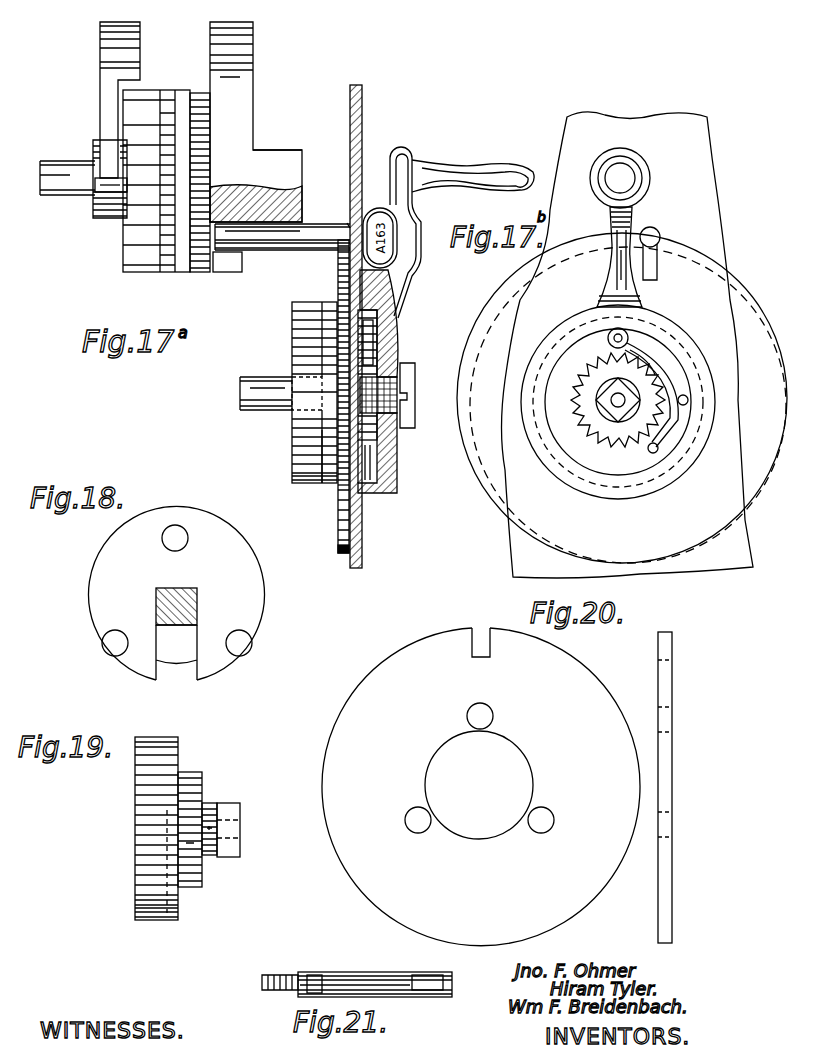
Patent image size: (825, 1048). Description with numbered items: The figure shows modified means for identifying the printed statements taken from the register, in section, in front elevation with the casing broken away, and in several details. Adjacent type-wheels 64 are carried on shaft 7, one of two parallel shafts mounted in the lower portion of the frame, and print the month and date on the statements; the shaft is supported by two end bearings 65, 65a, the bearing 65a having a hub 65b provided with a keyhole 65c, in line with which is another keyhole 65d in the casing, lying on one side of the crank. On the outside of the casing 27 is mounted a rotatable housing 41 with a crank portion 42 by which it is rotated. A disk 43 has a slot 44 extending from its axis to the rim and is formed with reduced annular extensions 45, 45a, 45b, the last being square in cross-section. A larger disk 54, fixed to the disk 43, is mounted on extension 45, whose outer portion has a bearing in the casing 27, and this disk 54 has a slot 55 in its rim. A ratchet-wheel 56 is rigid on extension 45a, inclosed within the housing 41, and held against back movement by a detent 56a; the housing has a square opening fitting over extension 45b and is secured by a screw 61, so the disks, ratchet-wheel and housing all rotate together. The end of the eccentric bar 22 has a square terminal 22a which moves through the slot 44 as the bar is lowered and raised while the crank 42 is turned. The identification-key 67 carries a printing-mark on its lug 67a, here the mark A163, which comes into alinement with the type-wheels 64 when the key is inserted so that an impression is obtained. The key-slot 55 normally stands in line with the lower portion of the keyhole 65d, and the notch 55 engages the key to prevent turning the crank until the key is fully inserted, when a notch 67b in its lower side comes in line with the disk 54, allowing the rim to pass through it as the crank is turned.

In FIG. 17A, the shaft 7 is at (59, 168).
In FIG. 17A, the eccentric bar 22 is at (238, 399).
In FIG. 17A, the square terminal 22a is at (297, 378).
In FIG. 18, the square terminal 22a is at (198, 606).
In FIG. 17A, the casing 27 is at (363, 135).
In FIG. 17B, the casing 27 is at (628, 345).
In FIG. 17A, the rotatable housing 41 is at (394, 336).
In FIG. 17B, the rotatable housing 41 is at (578, 480).
In FIG. 17A, the crank portion 42 is at (412, 160).
In FIG. 17B, the crank portion 42 is at (611, 263).
In FIG. 17A, the disk 43 is at (300, 434).
In FIG. 18, the disk 43 is at (176, 593).
In FIG. 19, the disk 43 is at (140, 922).
In FIG. 17A, the slot 44 is at (308, 458).
In FIG. 18, the slot 44 is at (176, 657).
In FIG. 19, the slot 44 is at (165, 880).
In FIG. 17A, the annular extension 45 is at (357, 360).
In FIG. 18, the annular extension 45 is at (176, 652).
In FIG. 19, the annular extension 45 is at (192, 771).
In FIG. 19, the annular extension 45a is at (210, 802).
In FIG. 17A, the annular extension 45b is at (390, 380).
In FIG. 17B, the annular extension 45b is at (620, 415).
In FIG. 19, the annular extension 45b is at (232, 805).
In FIG. 17A, the disk 54 is at (336, 540).
In FIG. 17B, the disk 54 is at (622, 398).
In FIG. 20, the disk 54 is at (690, 693).
In FIG. 20, the slot 55 is at (480, 634).
In FIG. 17A, the ratchet-wheel 56 is at (338, 252).
In FIG. 17B, the ratchet-wheel 56 is at (618, 393).
In FIG. 17A, the detent 56a is at (390, 312).
In FIG. 17B, the detent 56a is at (634, 390).
In FIG. 17A, the screw 61 is at (416, 378).
In FIG. 17A, the type-wheels 64 is at (128, 230).
In FIG. 17A, the end bearing 65 is at (101, 90).
In FIG. 17A, the end bearing 65a is at (256, 122).
In FIG. 17A, the hub 65b is at (277, 162).
In FIG. 17A, the keyhole 65c is at (297, 217).
In FIG. 17A, the keyhole 65d is at (349, 222).
In FIG. 17B, the keyhole 65d is at (652, 243).
In FIG. 17A, the identification-key 67 is at (290, 248).
In FIG. 21, the identification-key 67 is at (388, 972).
In FIG. 17A, the lug 67a is at (240, 270).
In FIG. 21, the lug 67a is at (446, 975).
In FIG. 21, the notch 67b is at (317, 974).